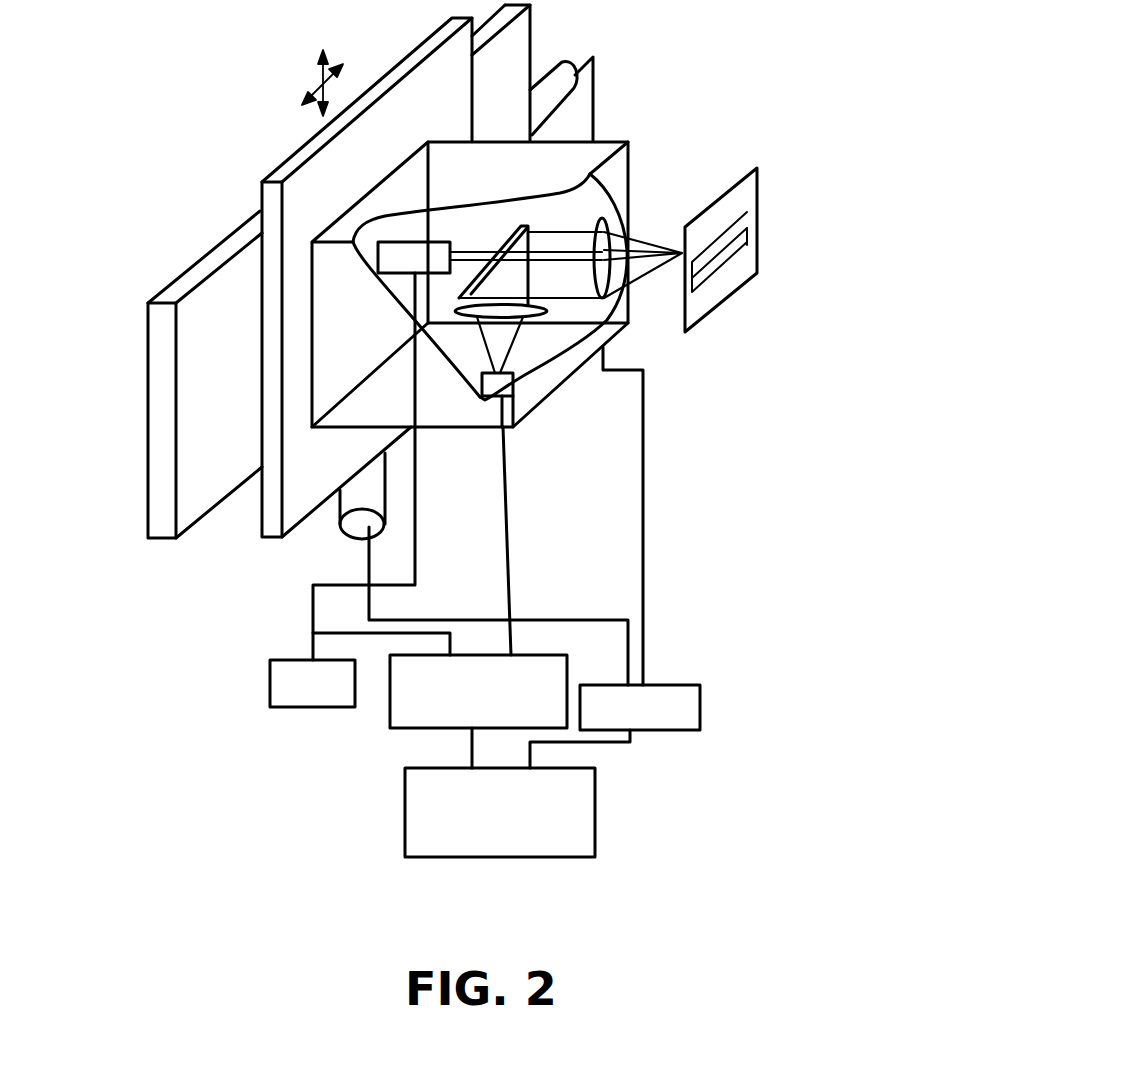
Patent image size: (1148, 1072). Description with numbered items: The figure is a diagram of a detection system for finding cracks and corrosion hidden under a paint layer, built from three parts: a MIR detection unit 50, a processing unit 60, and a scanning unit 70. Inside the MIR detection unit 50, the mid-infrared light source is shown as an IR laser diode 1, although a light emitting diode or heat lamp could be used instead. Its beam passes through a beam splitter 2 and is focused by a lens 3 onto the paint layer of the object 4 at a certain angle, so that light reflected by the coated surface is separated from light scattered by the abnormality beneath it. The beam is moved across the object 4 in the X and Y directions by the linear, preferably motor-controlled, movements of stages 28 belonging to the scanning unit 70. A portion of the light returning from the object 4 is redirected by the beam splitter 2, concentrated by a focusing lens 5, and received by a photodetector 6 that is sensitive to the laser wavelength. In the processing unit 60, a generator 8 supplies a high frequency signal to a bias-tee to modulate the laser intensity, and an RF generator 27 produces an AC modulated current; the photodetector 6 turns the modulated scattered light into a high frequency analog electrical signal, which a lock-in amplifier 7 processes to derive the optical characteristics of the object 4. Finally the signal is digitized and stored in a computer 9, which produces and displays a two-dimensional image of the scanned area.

The IR laser diode 1 is at (414, 257).
The beam splitter 2 is at (493, 265).
The lens 3 is at (602, 246).
The object 4 is at (721, 250).
The focusing lens 5 is at (493, 322).
The photodetector 6 is at (497, 400).
The lock-in amplifier 7 is at (478, 691).
The generator 8 is at (312, 683).
The computer 9 is at (500, 812).
The RF generator 27 is at (640, 707).
The stages 28 is at (205, 374).
The MIR detection unit 50 is at (618, 133).
The processing unit 60 is at (740, 616).
The scanning unit 70 is at (256, 170).